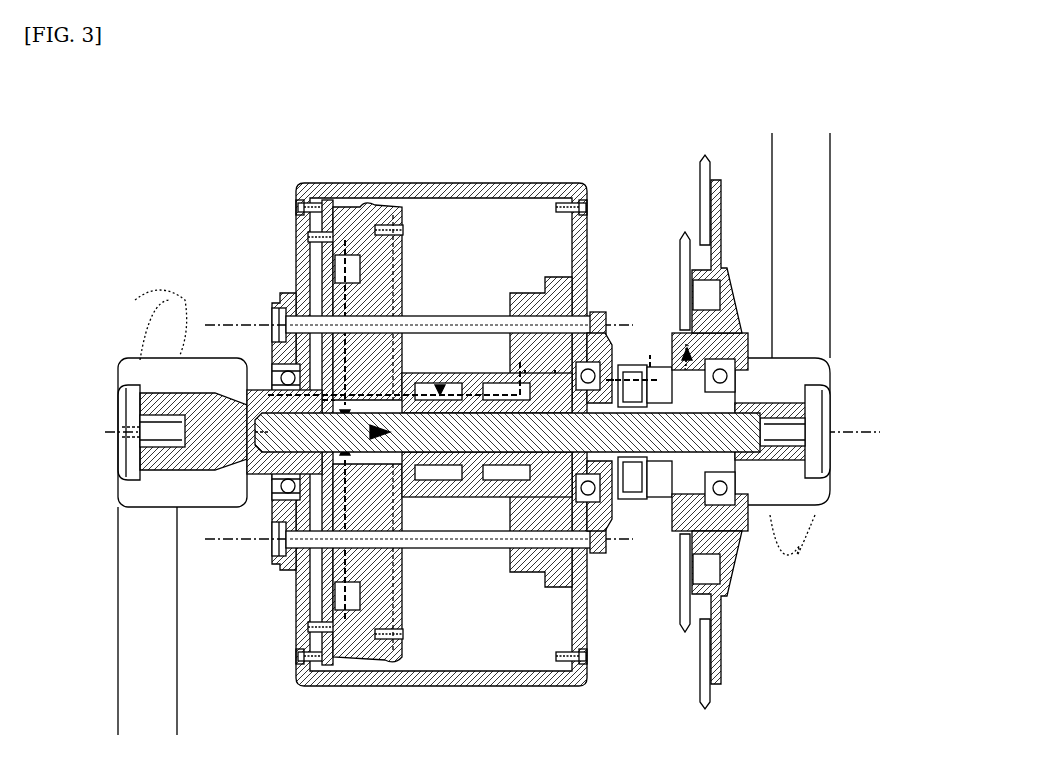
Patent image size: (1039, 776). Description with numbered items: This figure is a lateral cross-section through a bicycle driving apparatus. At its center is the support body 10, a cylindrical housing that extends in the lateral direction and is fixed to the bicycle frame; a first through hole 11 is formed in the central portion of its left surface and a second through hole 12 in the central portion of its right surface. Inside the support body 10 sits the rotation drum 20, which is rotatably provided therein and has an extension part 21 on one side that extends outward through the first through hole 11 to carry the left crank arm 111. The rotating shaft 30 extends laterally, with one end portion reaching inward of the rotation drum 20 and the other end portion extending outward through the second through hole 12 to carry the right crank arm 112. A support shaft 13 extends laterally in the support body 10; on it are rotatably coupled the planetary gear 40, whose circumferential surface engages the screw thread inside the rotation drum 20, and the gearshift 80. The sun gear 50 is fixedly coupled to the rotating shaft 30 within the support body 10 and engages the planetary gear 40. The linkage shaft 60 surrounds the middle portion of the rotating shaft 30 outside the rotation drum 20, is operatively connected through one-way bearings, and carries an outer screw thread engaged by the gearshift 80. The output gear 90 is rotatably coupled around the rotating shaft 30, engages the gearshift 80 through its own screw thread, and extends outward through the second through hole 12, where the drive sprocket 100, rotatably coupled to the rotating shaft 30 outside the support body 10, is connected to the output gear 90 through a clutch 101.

The support body 10 is at (468, 135).
The first through hole 11 is at (250, 540).
The second through hole 12 is at (615, 345).
The support shaft 13 is at (262, 340).
The rotation drum 20 is at (418, 238).
The extension part 21 is at (195, 470).
The rotating shaft 30 is at (830, 383).
The planetary gear 40 is at (292, 292).
The sun gear 50 is at (300, 578).
The linkage shaft 60 is at (460, 575).
The gearshift 80 is at (487, 302).
The output gear 90 is at (590, 582).
The drive sprocket 100 is at (722, 202).
The clutch 101 is at (633, 500).
The left crank arm 111 is at (110, 612).
The right crank arm 112 is at (830, 252).